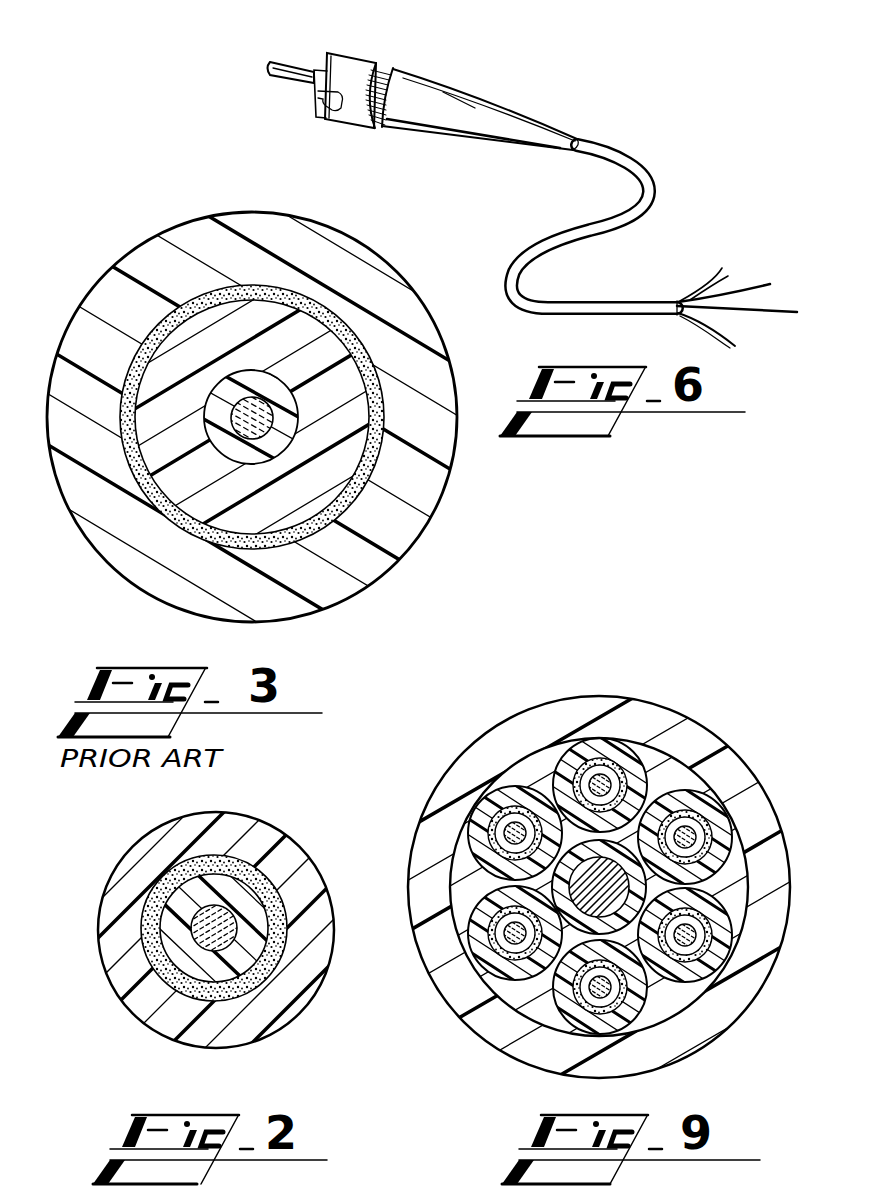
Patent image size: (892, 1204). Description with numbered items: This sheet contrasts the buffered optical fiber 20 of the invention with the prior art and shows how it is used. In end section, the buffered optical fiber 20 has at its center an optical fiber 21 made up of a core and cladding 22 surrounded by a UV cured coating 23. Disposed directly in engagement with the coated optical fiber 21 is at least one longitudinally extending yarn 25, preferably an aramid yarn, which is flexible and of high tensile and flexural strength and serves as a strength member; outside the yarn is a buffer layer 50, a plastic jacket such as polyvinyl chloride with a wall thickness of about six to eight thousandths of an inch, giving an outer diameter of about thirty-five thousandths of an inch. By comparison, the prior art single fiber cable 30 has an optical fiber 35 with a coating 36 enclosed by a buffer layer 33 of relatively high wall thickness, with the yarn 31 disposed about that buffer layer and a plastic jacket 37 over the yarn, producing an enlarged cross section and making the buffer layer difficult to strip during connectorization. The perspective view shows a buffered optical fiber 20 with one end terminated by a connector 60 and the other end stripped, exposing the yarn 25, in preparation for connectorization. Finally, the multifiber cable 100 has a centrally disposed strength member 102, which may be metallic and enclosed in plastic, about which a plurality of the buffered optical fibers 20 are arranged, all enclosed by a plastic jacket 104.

In FIG. 6, the buffered optical fiber 20 is at (655, 170).
In FIG. 2, the buffered optical fiber 20 is at (325, 843).
In FIG. 9, the buffered optical fiber 20 is at (541, 778).
In FIG. 2, the optical fiber 21 is at (268, 963).
In FIG. 2, the core and cladding 22 is at (200, 943).
In FIG. 9, the core and cladding 22 is at (607, 780).
In FIG. 2, the UV cured coating 23 is at (248, 917).
In FIG. 6, the yarn 25 is at (748, 289).
In FIG. 2, the yarn 25 is at (250, 880).
In FIG. 3, the single fiber cable 30 is at (436, 545).
In FIG. 3, the yarn 31 is at (245, 290).
In FIG. 3, the buffer layer 33 is at (300, 327).
In FIG. 3, the optical fiber 35 is at (274, 421).
In FIG. 3, the coating 36 is at (294, 407).
In FIG. 3, the plastic jacket 37 is at (147, 256).
In FIG. 2, the buffer layer 50 is at (150, 857).
In FIG. 6, the connector 60 is at (390, 56).
In FIG. 9, the multifiber cable 100 is at (672, 700).
In FIG. 9, the central strength member 102 is at (507, 995).
In FIG. 9, the jacket 104 is at (731, 1003).